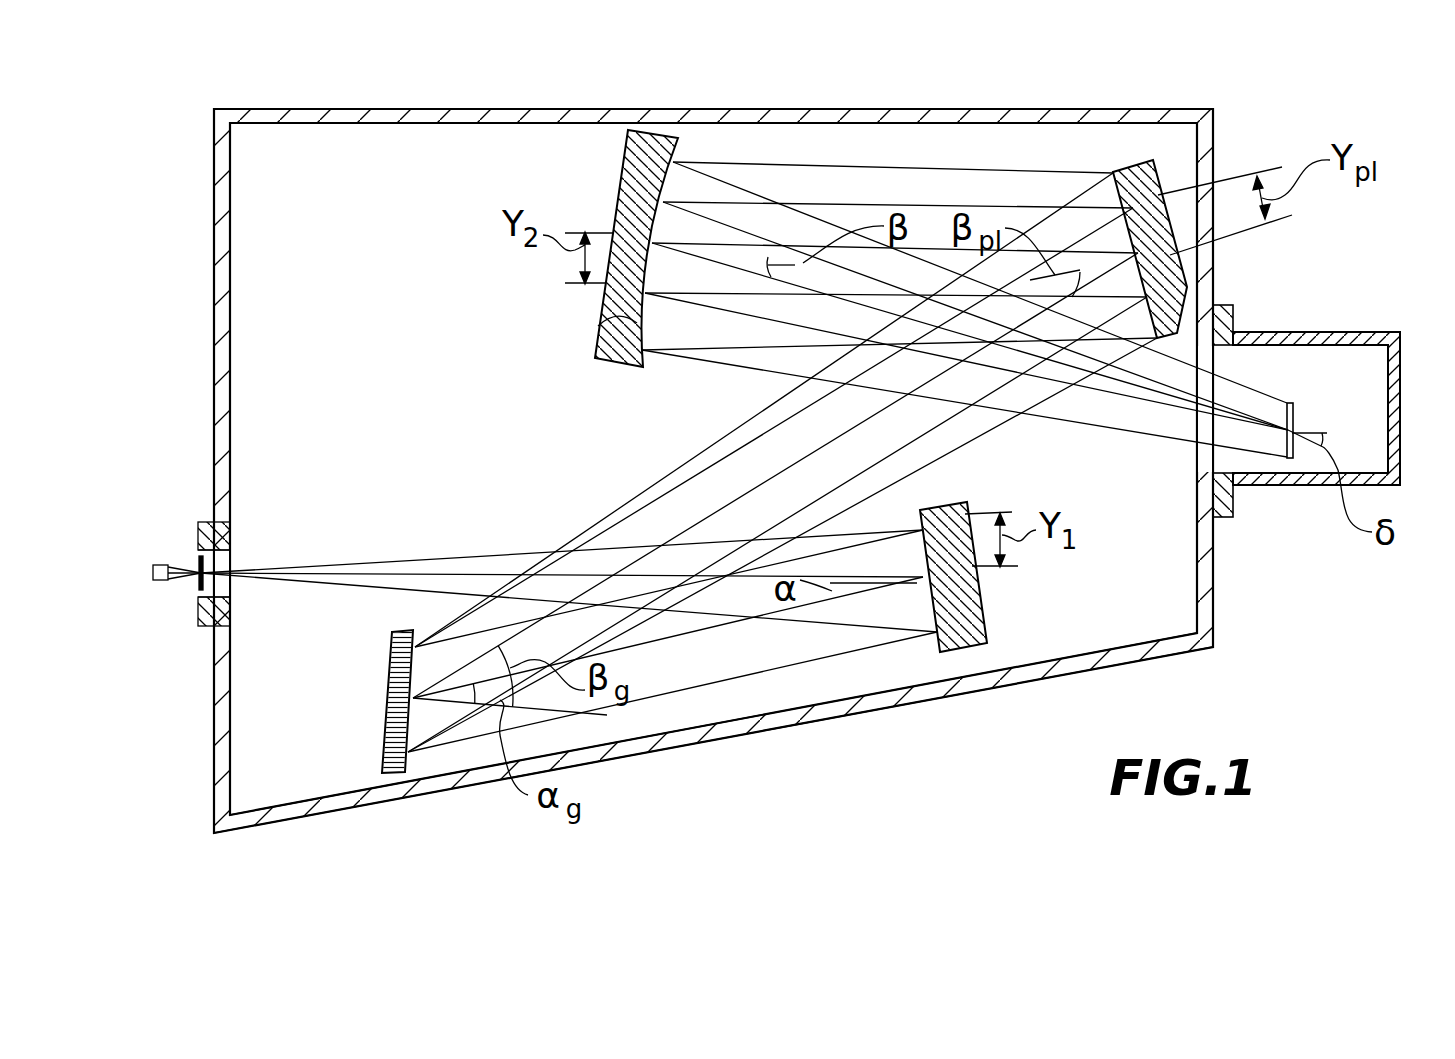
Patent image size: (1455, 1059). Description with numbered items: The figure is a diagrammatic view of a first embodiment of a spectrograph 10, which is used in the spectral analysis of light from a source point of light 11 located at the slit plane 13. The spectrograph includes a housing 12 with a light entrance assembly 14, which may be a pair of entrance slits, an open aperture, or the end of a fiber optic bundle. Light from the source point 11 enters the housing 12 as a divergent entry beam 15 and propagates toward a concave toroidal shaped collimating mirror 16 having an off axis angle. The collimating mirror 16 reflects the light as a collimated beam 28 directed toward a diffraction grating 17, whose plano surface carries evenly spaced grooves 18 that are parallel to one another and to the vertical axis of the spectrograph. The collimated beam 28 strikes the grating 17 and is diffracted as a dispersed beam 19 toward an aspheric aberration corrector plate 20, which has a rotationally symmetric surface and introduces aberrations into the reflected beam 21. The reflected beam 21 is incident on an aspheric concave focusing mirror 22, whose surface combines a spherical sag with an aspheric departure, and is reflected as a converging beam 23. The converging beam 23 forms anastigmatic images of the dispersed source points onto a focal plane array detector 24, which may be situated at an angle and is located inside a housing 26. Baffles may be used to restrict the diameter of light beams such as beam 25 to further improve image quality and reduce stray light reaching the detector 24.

The spectrograph 10 is at (178, 286).
The source point of light 11 is at (159, 582).
The housing 12 is at (218, 697).
The slit plane 13 is at (198, 562).
The light entrance assembly 14 is at (205, 522).
The divergent entry beam 15 is at (445, 554).
The concave toroidal shaped collimating mirror 16 is at (985, 625).
The diffraction grating 17 is at (391, 636).
The evenly spaced grooves 18 is at (390, 681).
The dispersed beam 19 is at (672, 485).
The aspheric aberration corrector plate 20 is at (1190, 320).
The reflected beam 21 is at (853, 205).
The aspheric concave focusing mirror 22 is at (598, 326).
The converging beam 23 is at (1083, 425).
The focal plane array detector 24 is at (1293, 410).
The light beam 25 is at (1237, 323).
The housing 26 is at (1388, 332).
The collimated beam 28 is at (748, 678).